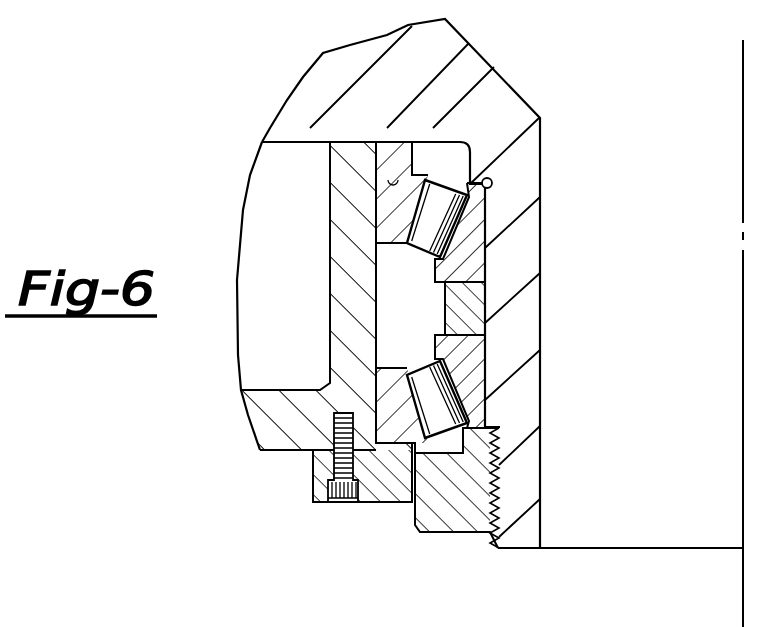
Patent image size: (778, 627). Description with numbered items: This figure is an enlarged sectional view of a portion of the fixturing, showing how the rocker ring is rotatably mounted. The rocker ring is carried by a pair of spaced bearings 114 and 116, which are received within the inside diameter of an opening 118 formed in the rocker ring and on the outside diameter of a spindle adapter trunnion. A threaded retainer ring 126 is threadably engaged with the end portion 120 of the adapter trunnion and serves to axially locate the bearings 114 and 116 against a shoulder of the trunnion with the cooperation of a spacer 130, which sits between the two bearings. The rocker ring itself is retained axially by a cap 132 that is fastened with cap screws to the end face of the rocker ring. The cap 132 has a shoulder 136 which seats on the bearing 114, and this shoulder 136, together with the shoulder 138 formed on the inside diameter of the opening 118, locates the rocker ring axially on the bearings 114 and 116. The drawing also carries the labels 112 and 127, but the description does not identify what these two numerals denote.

The housing 112 is at (480, 323).
The bearing 114 is at (460, 408).
The bearing 116 is at (448, 217).
The opening 118 is at (380, 303).
The end portion 120 is at (508, 553).
The threaded retainer ring 126 is at (467, 533).
The O-ring seal 127 is at (495, 182).
The spacer 130 is at (478, 292).
The cap 132 is at (310, 482).
The shoulder 136 is at (378, 447).
The shoulder 138 is at (413, 178).